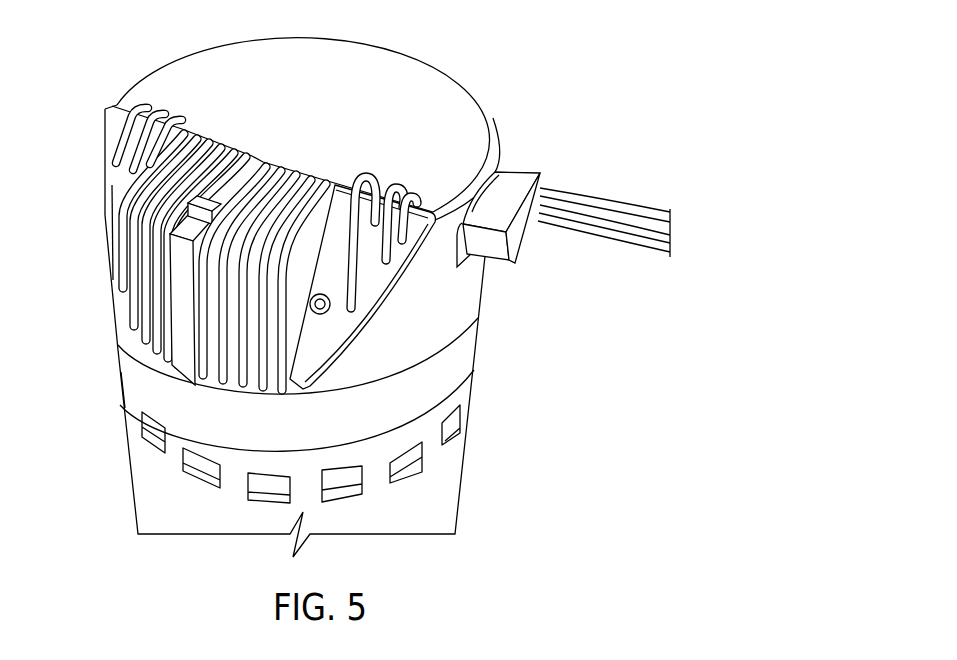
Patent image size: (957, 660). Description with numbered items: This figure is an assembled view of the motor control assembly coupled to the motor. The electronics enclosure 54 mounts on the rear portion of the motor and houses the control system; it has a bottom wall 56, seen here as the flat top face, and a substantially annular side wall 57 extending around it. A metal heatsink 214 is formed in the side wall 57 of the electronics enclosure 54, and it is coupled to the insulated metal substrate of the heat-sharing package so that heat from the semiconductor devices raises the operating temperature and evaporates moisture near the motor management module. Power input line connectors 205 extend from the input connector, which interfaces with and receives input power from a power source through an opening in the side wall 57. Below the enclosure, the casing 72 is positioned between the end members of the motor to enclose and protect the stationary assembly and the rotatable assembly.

The electronics enclosure 54 is at (160, 73).
The bottom wall 56 is at (428, 83).
The side wall 57 is at (441, 302).
The casing 72 is at (130, 471).
The power input line connectors 205 is at (582, 198).
The metal heatsink 214 is at (125, 206).